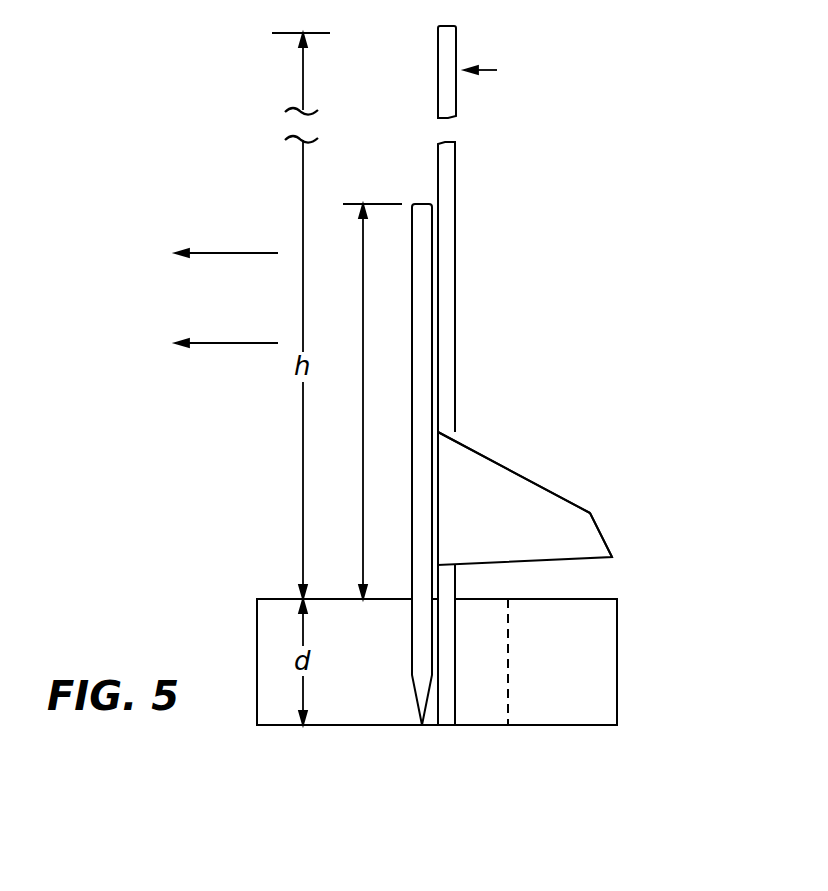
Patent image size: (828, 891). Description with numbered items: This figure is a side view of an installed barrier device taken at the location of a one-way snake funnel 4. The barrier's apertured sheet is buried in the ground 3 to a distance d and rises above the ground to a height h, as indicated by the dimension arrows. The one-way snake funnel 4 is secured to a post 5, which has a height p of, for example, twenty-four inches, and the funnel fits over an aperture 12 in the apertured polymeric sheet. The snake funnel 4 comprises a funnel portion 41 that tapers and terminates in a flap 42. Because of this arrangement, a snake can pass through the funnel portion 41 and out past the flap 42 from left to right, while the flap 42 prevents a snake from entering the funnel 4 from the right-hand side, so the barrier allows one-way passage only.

The ground 3 is at (595, 672).
The one-way snake funnel 4 is at (592, 472).
The post 5 is at (430, 243).
The aperture 12 is at (437, 512).
The funnel portion 41 is at (487, 482).
The flap 42 is at (618, 533).